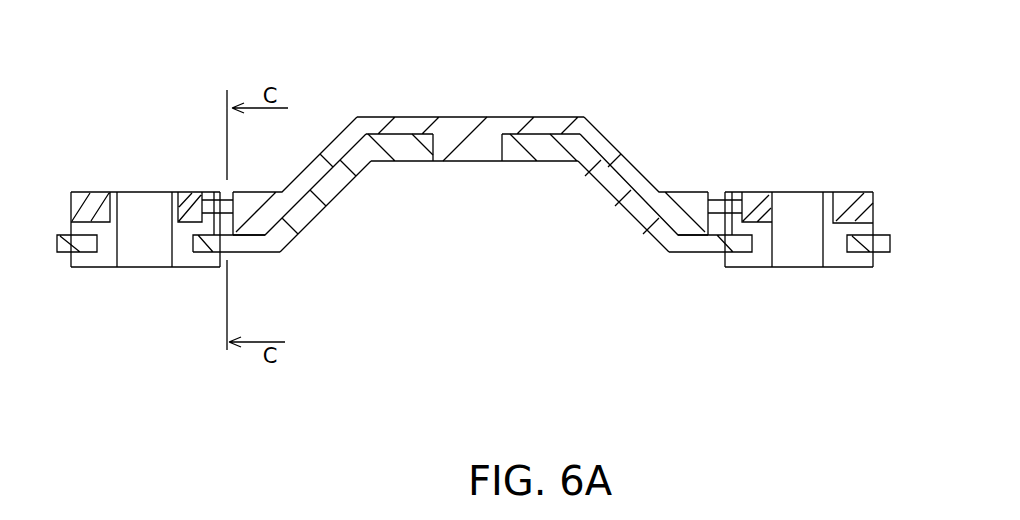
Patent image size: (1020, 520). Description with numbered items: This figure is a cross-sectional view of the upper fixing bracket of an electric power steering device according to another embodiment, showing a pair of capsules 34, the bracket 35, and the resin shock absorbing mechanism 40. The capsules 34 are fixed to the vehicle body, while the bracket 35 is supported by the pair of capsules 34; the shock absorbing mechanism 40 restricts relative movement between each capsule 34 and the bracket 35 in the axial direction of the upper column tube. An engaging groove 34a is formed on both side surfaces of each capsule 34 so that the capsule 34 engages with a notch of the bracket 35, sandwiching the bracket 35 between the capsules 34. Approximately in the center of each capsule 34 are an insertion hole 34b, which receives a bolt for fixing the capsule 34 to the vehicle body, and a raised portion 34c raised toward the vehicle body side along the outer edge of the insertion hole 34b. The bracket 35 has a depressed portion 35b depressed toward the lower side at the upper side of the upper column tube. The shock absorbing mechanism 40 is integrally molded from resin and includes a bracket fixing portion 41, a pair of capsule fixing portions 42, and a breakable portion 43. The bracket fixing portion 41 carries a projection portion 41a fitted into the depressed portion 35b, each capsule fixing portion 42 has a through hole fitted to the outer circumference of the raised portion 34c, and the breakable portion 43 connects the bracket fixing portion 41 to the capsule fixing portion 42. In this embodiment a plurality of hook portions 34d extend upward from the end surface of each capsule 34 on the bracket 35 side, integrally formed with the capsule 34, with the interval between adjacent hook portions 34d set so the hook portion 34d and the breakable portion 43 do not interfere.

The shock absorbing mechanism 40 is at (645, 93).
The bracket fixing portion 41 is at (580, 117).
The projection portion 41a is at (488, 147).
The bracket 35 is at (340, 183).
The depressed portion 35b is at (443, 150).
The capsule 34 is at (112, 264).
The engaging groove 34a is at (88, 253).
The insertion hole 34b is at (162, 250).
The raised portion 34c is at (185, 200).
The hook portion 34d is at (217, 192).
The capsule fixing portion 42 is at (86, 200).
The breakable portion 43 is at (222, 205).